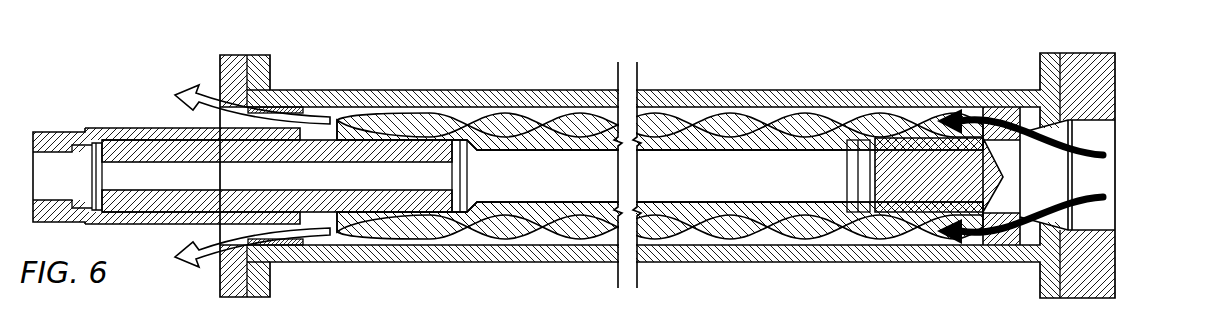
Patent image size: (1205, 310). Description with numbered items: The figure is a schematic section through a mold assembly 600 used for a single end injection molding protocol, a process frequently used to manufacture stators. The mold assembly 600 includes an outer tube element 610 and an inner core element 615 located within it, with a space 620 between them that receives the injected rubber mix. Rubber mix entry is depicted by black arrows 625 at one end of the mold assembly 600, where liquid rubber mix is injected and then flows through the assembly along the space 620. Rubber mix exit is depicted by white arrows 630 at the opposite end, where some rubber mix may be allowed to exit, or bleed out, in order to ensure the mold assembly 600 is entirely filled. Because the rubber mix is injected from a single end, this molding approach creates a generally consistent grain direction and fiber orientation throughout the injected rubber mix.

The mold assembly 600 is at (905, 66).
The outer tube element 610 is at (340, 90).
The inner core element 615 is at (780, 130).
The space 620 is at (765, 238).
The black arrows 625 is at (1098, 184).
The white arrows 630 is at (205, 97).